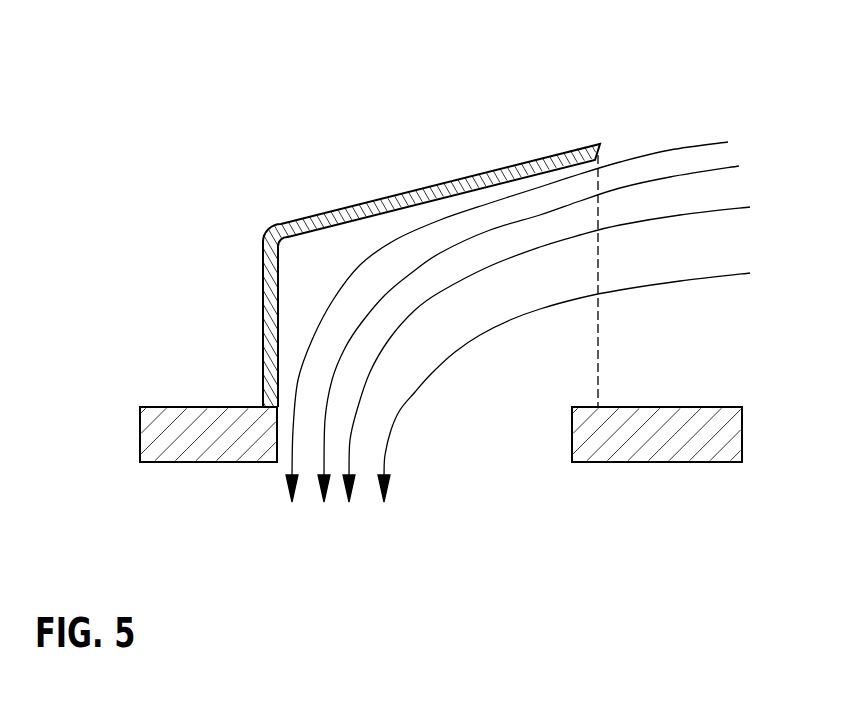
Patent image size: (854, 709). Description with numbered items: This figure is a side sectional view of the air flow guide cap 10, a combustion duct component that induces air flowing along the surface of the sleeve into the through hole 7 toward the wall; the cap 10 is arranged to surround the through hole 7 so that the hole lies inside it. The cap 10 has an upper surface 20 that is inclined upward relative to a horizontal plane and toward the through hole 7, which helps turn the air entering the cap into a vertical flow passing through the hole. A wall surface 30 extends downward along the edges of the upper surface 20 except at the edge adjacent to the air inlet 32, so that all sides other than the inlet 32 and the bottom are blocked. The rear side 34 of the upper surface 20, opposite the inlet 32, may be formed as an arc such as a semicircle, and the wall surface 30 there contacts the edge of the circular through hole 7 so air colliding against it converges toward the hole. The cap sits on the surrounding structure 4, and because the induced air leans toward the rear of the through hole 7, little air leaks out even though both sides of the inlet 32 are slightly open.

The base / housing wall 4 is at (192, 445).
The through hole 7 is at (472, 436).
The air flow guide cap 10 is at (613, 129).
The upper surface 20 is at (495, 177).
The wall surface 30 is at (272, 330).
The air inlet 32 is at (600, 258).
The rear side 34 is at (207, 321).